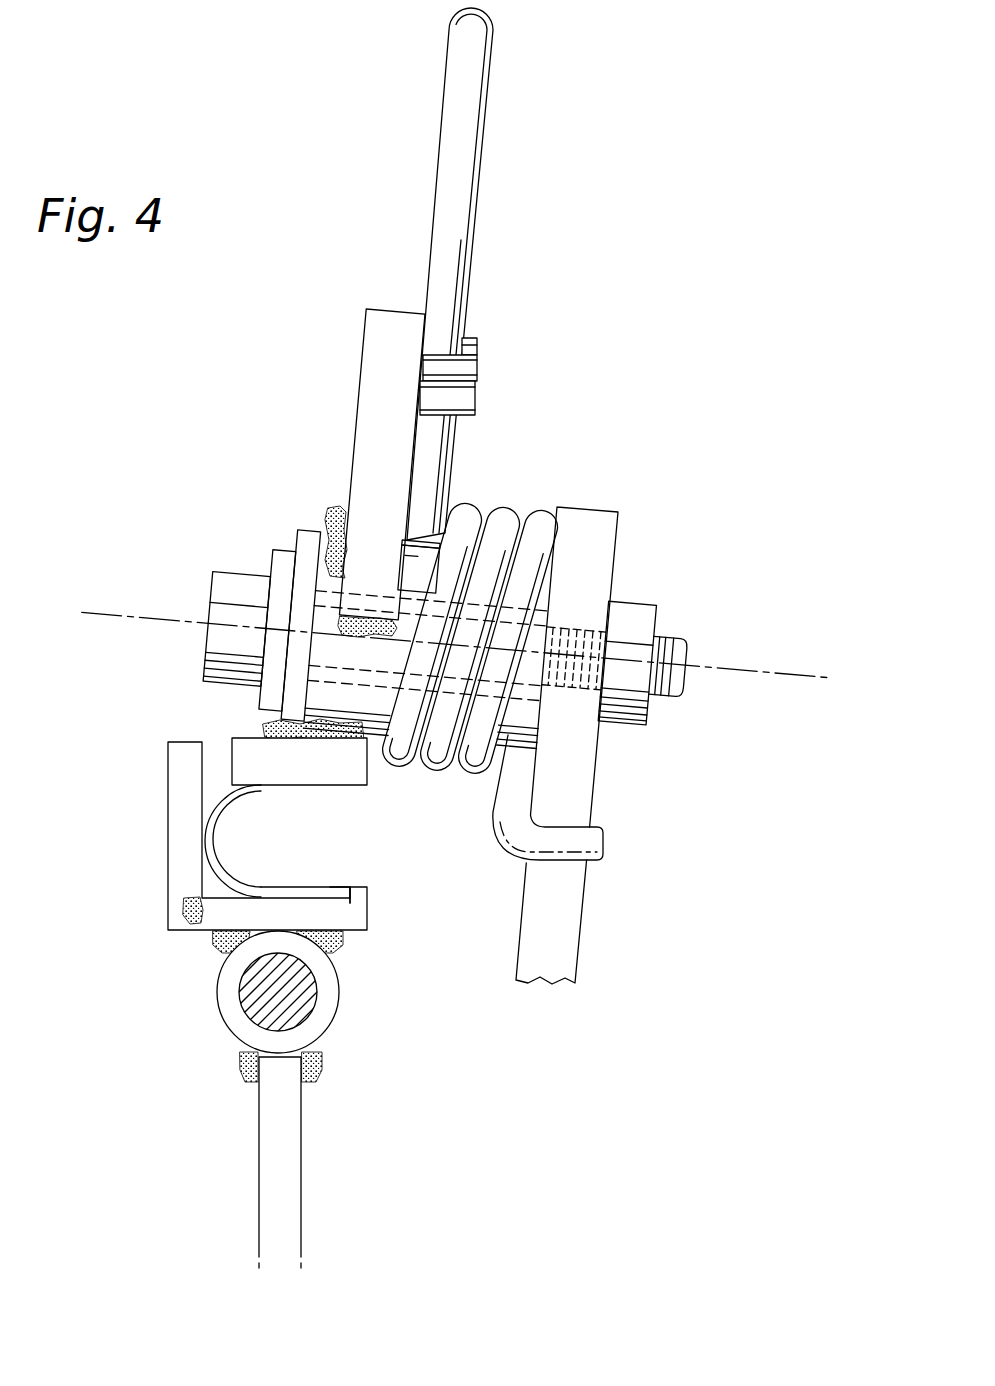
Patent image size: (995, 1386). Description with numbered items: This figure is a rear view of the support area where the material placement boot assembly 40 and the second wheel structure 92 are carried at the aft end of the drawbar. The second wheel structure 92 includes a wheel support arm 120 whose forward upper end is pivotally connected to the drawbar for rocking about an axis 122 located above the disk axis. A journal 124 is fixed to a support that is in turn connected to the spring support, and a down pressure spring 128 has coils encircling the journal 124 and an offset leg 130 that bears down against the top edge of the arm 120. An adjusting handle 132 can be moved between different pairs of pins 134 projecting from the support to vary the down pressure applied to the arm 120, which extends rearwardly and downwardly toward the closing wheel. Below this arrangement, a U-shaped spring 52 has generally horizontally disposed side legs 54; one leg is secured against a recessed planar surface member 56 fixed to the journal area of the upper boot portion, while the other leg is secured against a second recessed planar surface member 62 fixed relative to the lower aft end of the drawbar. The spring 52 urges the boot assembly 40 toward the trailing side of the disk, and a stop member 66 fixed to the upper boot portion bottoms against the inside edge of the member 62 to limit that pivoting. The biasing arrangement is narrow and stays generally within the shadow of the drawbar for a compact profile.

The adjusting handle 132 is at (473, 103).
The pins 134 is at (471, 410).
The down pressure spring 128 is at (503, 505).
The journal 124 is at (310, 523).
The axis 122 is at (115, 612).
The second recessed planar surface member 62 is at (280, 775).
The stop member 66 is at (180, 769).
The U-shaped spring 52 is at (205, 840).
The side legs 54 is at (300, 790).
The recessed planar surface member 56 is at (330, 883).
The offset leg 130 is at (597, 837).
The second wheel structure 92 is at (590, 745).
The wheel support arm 120 is at (570, 967).
The material placement boot assembly 40 is at (235, 1190).